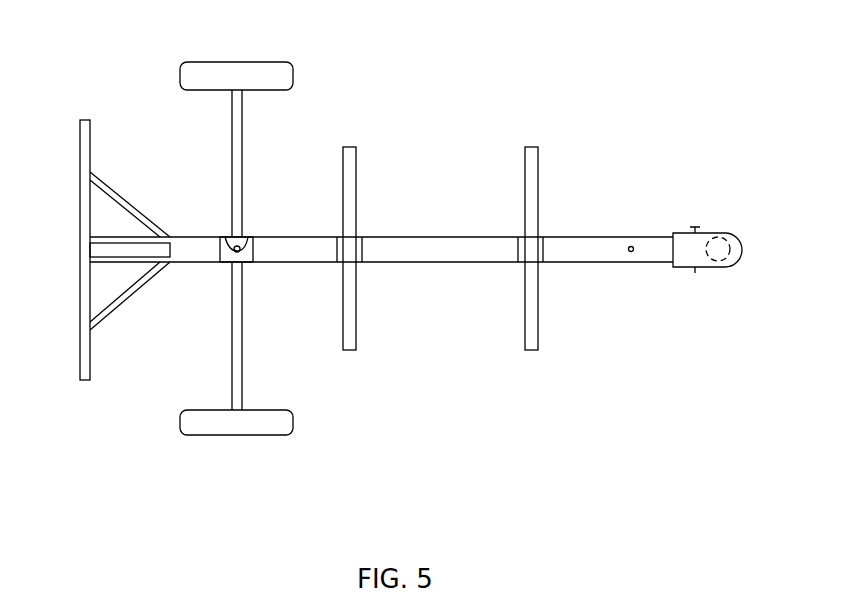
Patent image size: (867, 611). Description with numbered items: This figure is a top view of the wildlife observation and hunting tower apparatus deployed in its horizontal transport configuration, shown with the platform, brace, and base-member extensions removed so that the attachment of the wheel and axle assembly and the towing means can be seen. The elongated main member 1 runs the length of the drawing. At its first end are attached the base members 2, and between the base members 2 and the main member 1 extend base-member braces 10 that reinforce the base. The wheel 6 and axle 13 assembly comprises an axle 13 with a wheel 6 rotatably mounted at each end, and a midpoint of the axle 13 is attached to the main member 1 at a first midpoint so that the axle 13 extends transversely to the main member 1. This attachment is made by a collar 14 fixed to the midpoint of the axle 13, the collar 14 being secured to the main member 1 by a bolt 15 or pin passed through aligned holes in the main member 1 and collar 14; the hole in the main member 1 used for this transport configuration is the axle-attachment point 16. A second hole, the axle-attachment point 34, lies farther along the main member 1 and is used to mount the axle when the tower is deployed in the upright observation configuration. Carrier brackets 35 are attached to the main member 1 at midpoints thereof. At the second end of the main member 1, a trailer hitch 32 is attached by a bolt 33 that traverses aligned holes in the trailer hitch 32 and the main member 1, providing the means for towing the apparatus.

The main member 1 is at (457, 263).
The base member 2 is at (80, 153).
The wheel 6 is at (247, 62).
The base-member brace 10 is at (130, 201).
The axle 13 is at (243, 357).
The collar 14 is at (228, 264).
The bolt 15 is at (246, 240).
The axle-attachment point 16 is at (232, 240).
The trailer hitch 32 is at (725, 268).
The bolt 33 is at (692, 216).
The axle-attachment point 34 is at (631, 252).
The carrier bracket 35 is at (356, 182).